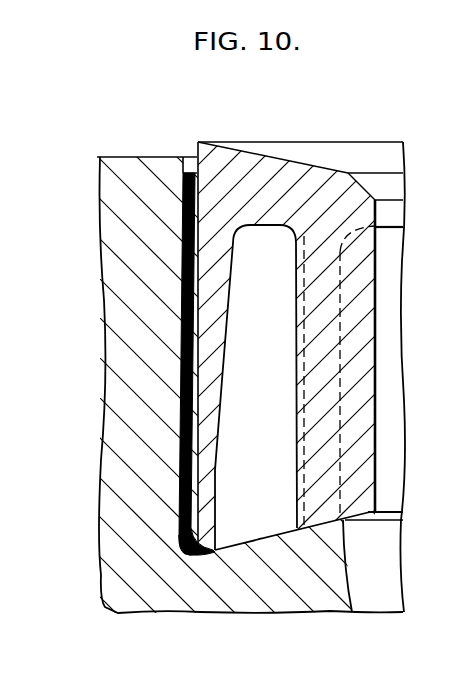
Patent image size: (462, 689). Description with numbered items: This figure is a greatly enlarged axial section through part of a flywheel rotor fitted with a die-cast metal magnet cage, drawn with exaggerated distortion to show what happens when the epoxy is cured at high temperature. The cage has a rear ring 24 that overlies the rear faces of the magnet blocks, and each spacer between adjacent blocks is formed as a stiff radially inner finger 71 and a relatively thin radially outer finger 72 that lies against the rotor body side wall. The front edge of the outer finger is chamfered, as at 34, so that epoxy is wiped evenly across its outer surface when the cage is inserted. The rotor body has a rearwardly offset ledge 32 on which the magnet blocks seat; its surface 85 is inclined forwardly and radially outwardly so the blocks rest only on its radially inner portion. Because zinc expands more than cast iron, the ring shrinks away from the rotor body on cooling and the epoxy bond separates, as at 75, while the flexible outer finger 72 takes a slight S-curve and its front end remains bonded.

The rear ring 24 is at (362, 160).
The radially inner finger 71 is at (376, 288).
The radially outer finger 72 is at (204, 345).
The separation in the epoxy 75 is at (190, 173).
The surface 85 is at (259, 538).
The ledge 32 is at (343, 554).
The chamfer 34 is at (190, 555).